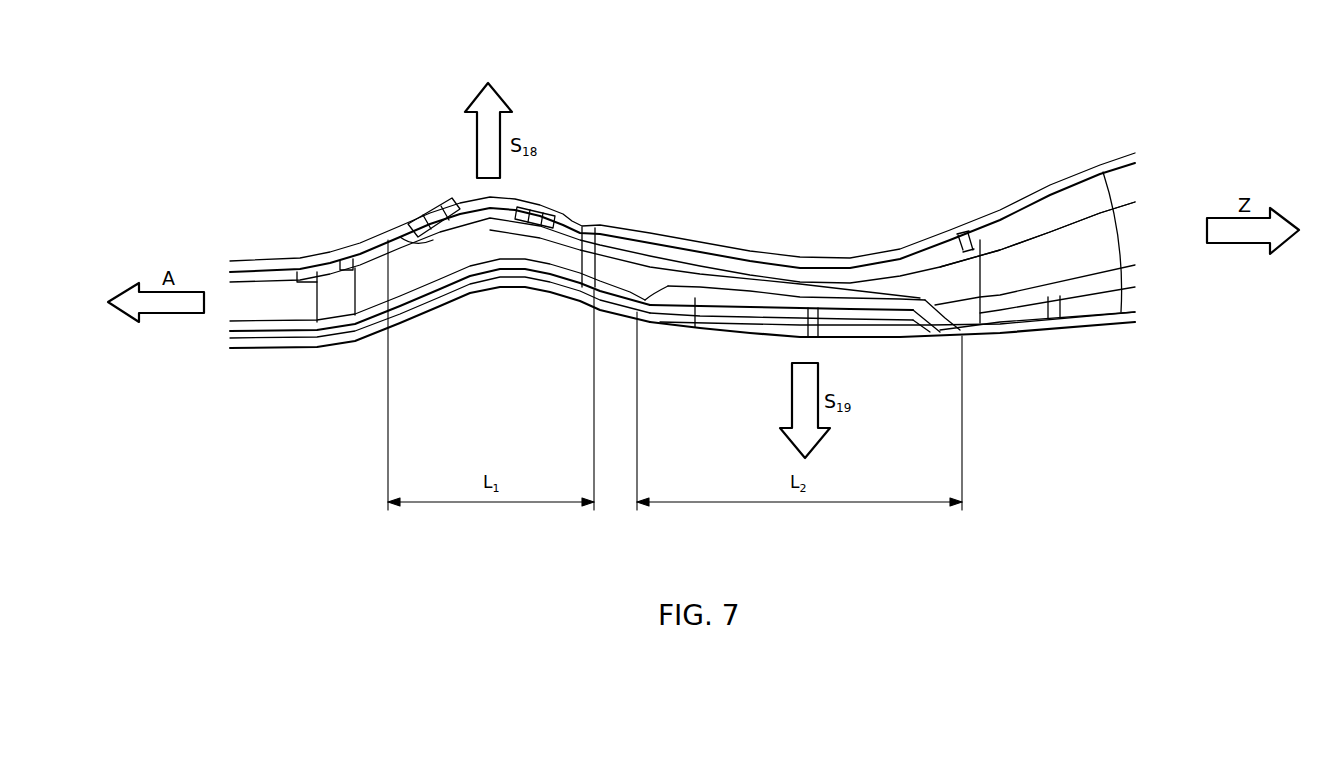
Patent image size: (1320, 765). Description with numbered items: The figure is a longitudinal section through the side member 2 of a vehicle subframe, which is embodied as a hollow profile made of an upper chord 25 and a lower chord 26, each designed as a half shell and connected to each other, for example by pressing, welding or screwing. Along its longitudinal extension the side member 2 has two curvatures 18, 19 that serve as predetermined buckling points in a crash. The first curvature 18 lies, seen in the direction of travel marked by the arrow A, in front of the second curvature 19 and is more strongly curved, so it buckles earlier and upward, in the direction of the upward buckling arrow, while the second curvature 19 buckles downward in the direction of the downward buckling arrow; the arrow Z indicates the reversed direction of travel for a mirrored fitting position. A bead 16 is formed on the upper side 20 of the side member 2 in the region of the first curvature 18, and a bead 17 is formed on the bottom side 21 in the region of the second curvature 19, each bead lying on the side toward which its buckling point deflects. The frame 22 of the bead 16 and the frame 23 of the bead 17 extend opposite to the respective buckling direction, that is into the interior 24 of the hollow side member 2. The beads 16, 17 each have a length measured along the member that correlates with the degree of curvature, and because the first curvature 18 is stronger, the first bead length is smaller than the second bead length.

The side member 2 is at (681, 94).
The bead 16 is at (452, 202).
The bead 17 is at (726, 340).
The curvature 18 is at (510, 308).
The curvature 19 is at (808, 246).
The upper side 20 is at (647, 232).
The bottom side 21 is at (1037, 340).
The frame 22 is at (410, 227).
The frame 23 is at (648, 332).
The interior 24 is at (1075, 257).
The upper chord 25 is at (1125, 222).
The lower chord 26 is at (1108, 300).